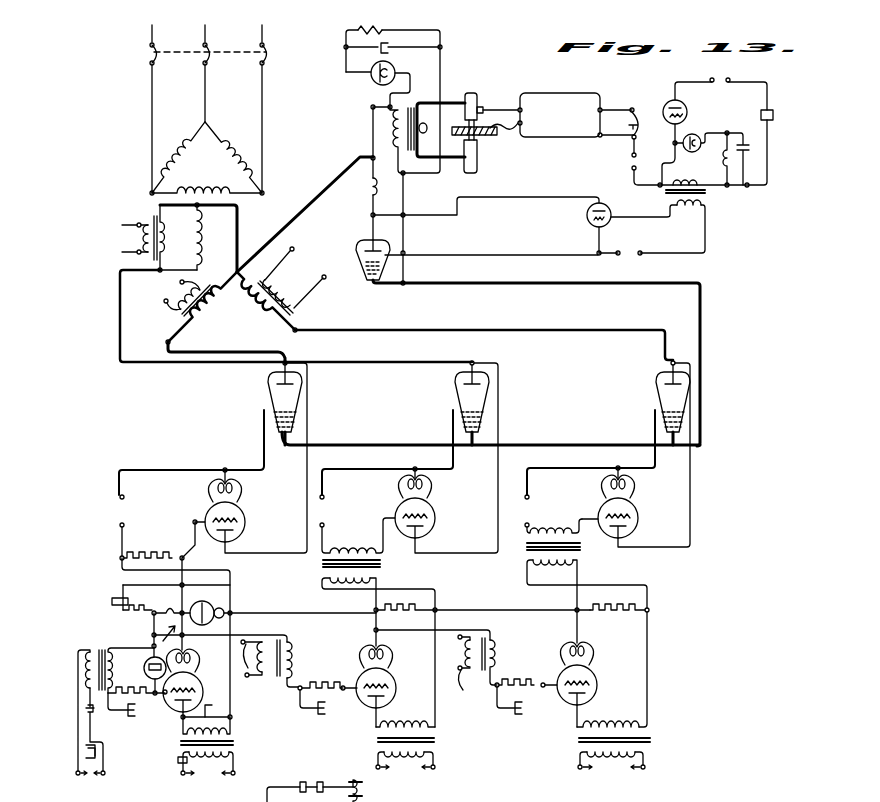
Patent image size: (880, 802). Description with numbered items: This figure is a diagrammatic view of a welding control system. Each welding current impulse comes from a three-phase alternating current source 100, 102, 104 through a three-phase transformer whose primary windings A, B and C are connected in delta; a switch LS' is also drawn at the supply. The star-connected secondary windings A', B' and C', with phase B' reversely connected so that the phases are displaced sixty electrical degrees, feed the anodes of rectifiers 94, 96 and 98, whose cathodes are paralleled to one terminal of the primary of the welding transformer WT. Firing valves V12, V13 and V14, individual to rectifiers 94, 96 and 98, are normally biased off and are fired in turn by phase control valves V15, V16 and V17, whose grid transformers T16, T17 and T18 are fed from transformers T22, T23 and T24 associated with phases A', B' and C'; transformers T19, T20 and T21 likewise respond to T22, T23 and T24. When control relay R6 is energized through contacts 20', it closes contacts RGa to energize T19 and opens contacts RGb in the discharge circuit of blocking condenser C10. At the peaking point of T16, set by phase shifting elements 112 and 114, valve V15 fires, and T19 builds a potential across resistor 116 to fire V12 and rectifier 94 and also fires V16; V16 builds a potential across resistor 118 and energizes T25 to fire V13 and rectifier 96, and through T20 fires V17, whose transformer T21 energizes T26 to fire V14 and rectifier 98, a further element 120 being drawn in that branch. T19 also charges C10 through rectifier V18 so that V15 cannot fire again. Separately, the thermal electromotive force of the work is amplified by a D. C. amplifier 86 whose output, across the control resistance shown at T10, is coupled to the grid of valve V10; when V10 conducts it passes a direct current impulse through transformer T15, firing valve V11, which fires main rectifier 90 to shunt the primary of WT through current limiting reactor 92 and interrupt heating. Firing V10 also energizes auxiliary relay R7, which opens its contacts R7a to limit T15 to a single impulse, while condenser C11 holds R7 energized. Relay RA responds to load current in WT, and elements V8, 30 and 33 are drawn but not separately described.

The three-phase alternating current source 100 is at (149, 32).
The three-phase alternating current source 102 is at (203, 32).
The three-phase alternating current source 104 is at (260, 32).
The line switch LS' is at (228, 48).
The primary winding A is at (236, 155).
The primary winding B is at (176, 155).
The primary winding C is at (207, 180).
The control relay RA is at (357, 27).
The tube V8 is at (396, 70).
The welding transformer WT is at (373, 125).
The current limiting reactor 92 is at (372, 187).
The D. C. amplifier 86 is at (585, 93).
The control resistance T10 is at (632, 108).
The electronic valve V10 is at (687, 105).
The auxiliary control relay R7 is at (727, 133).
The contacts of relay R7 R7a is at (763, 111).
The condenser C11 is at (750, 148).
The transformer T15 is at (705, 191).
The firing valve V11 is at (606, 208).
The main rectifier 90 is at (390, 247).
The secondary winding B' is at (296, 282).
The secondary winding A' is at (268, 260).
The secondary winding C' is at (452, 316).
The transformer T25 is at (126, 233).
The control transformer T22 is at (165, 290).
The control transformer T24 is at (294, 250).
The main rectifier 94 is at (263, 390).
The main rectifier 96 is at (455, 382).
The main rectifier 98 is at (656, 382).
The firing valve V12 is at (245, 522).
The firing valve V13 is at (435, 518).
The firing valve V14 is at (636, 518).
The transformer T26 is at (587, 577).
The resistor 116 is at (154, 557).
The resistor 118 is at (388, 610).
The resistor 120 is at (627, 614).
The normally closed contacts of relay R6 RGb is at (112, 602).
The blocking condenser C10 is at (170, 609).
The rectifier V18 is at (215, 607).
The grid transformer T16 is at (100, 642).
The phase shifting element 112 is at (85, 709).
The phase shifting element 114 is at (86, 749).
The glow tube 30 is at (146, 665).
The phase control valve V15 is at (188, 673).
The contact 33 is at (208, 707).
The transformer T19 is at (234, 743).
The normally open contacts of relay R6 RGa is at (178, 763).
The grid transformer T17 is at (291, 649).
The control transformer T23 is at (338, 732).
The phase control valve V16 is at (391, 688).
The transformer T20 is at (435, 744).
The grid transformer T18 is at (496, 641).
The phase control valve V17 is at (593, 689).
The transformer T21 is at (650, 741).
The contacts of control relay 20' is at (310, 783).
The control relay R6 is at (361, 790).